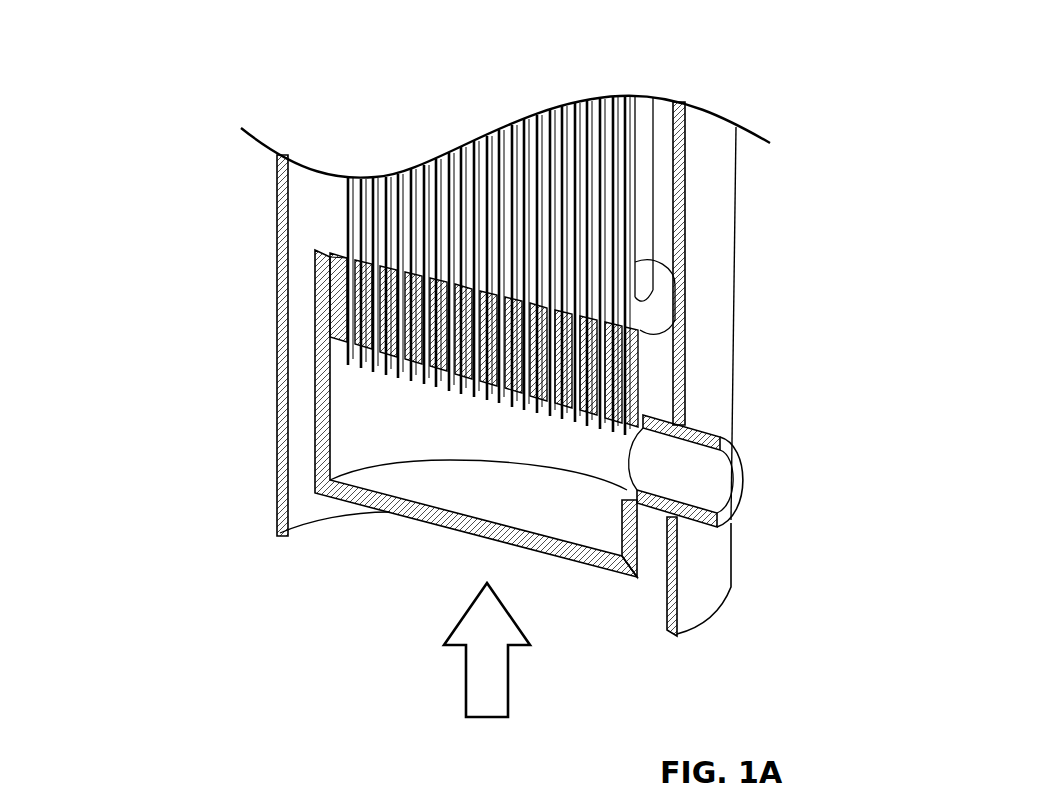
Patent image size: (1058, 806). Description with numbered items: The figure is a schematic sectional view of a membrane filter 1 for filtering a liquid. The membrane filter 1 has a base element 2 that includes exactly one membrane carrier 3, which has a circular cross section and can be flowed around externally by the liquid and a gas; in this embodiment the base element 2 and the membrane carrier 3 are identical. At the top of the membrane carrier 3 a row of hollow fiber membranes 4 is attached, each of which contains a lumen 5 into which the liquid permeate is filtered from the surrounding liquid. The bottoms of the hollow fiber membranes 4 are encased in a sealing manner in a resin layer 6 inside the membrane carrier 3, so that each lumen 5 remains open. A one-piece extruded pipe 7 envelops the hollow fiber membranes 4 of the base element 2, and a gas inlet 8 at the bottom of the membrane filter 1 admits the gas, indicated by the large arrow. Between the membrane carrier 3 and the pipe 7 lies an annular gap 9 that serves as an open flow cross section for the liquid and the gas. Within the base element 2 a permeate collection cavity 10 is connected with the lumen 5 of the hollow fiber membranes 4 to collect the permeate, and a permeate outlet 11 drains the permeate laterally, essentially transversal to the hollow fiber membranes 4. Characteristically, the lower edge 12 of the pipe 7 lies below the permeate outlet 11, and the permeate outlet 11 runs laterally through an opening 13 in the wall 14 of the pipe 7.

The membrane filter 1 is at (176, 214).
The base element 2 is at (338, 561).
The membrane carrier 3 is at (680, 262).
The hollow fiber membranes 4 is at (630, 112).
The lumen 5 is at (373, 372).
The resin layer 6 is at (617, 378).
The pipe 7 is at (715, 587).
The gas inlet 8 is at (478, 662).
The annular gap 9 is at (660, 572).
The permeate collection cavity 10 is at (477, 482).
The permeate outlet 11 is at (708, 480).
The lower edge 12 is at (698, 625).
The opening 13 is at (683, 425).
The wall 14 is at (680, 200).